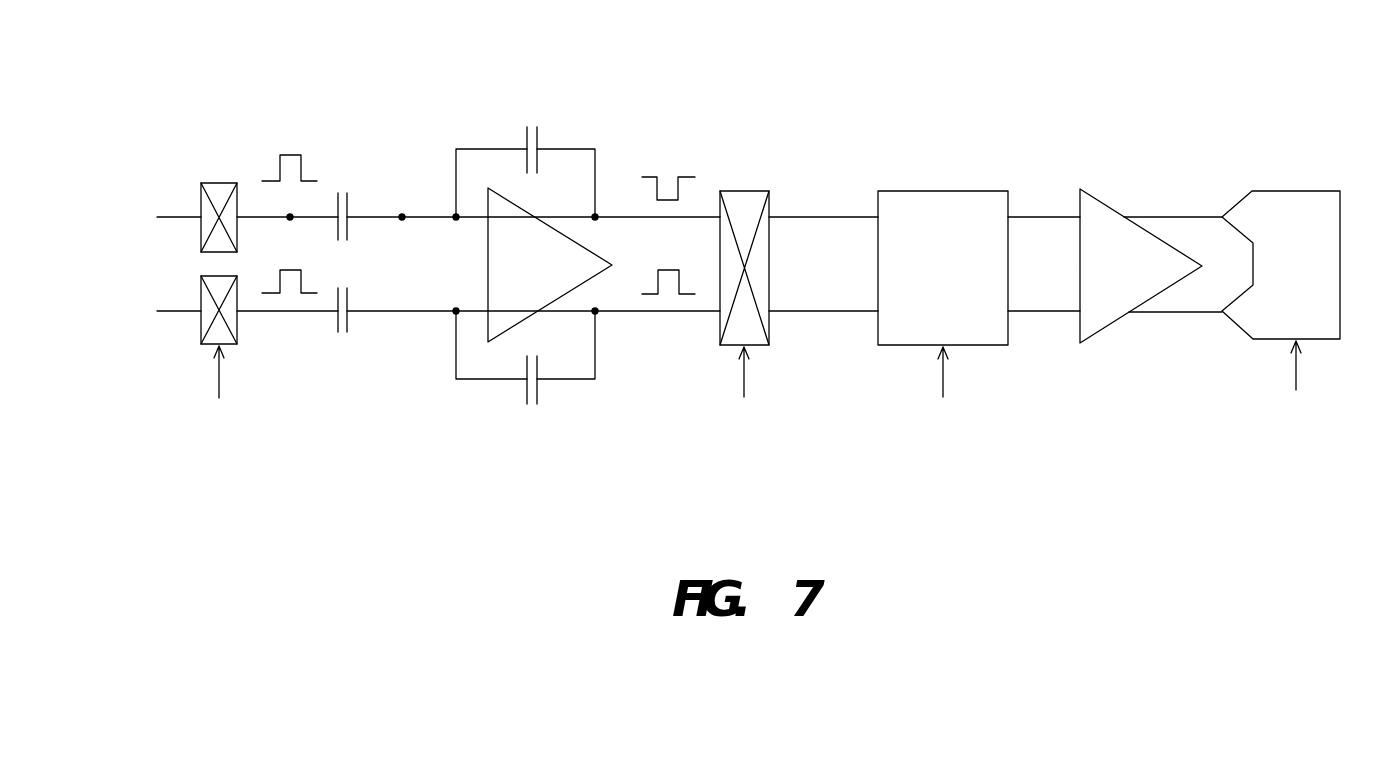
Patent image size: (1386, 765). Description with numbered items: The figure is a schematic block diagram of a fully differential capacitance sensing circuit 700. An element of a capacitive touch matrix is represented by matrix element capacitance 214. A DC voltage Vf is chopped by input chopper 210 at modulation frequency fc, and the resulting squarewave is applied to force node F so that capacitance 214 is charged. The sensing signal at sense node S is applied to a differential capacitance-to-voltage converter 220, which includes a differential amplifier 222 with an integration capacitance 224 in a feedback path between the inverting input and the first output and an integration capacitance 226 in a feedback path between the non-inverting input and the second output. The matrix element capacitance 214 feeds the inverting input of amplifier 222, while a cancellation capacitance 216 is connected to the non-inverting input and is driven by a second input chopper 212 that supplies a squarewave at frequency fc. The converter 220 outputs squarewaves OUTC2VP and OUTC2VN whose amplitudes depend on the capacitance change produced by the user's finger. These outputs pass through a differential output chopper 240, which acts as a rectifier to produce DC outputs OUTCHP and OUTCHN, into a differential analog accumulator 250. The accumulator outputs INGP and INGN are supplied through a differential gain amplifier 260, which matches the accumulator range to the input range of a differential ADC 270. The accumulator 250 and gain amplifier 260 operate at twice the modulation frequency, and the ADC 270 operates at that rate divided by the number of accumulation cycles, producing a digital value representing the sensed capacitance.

The fully differential capacitance sensing circuit 700 is at (1024, 81).
The input chopper 210 is at (220, 182).
The input chopper 212 is at (212, 345).
The matrix element capacitance 214 is at (350, 190).
The cancellation capacitance 216 is at (350, 330).
The differential capacitance-to-voltage converter 220 is at (463, 112).
The differential amplifier 222 is at (487, 293).
The integration capacitance 224 is at (540, 135).
The integration capacitance 226 is at (540, 395).
The differential output chopper 240 is at (746, 190).
The differential analog accumulator 250 is at (938, 190).
The differential gain amplifier 260 is at (1086, 188).
The differential ADC 270 is at (1278, 190).